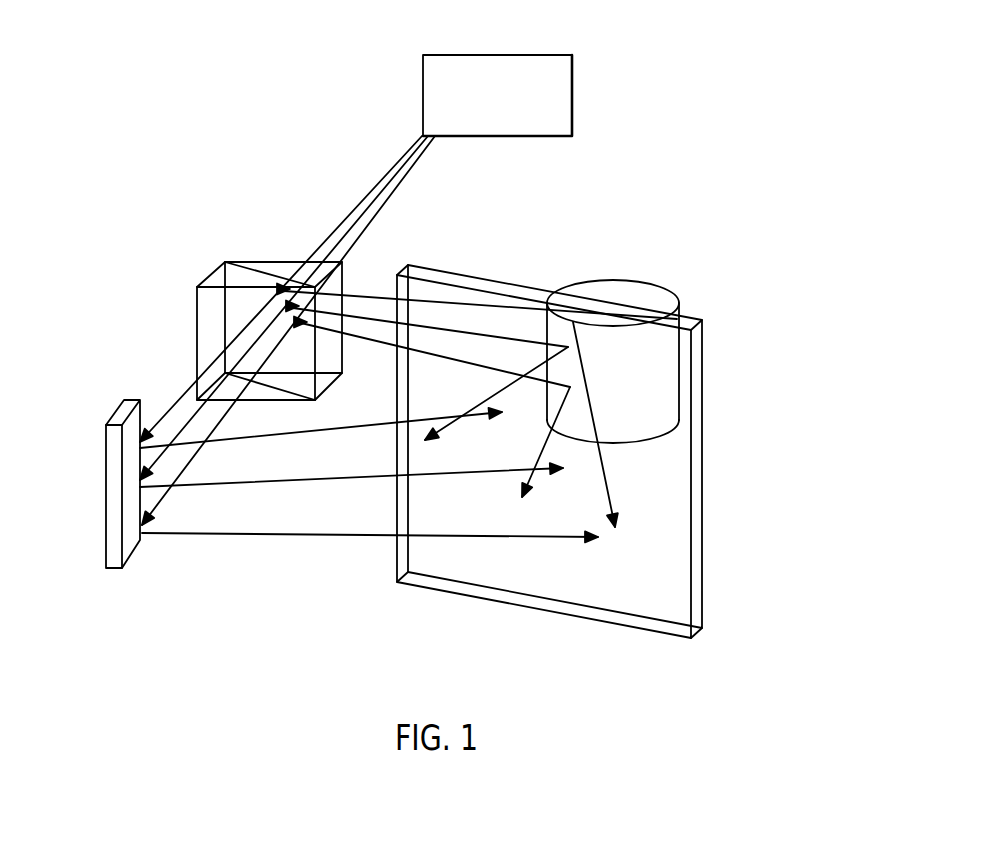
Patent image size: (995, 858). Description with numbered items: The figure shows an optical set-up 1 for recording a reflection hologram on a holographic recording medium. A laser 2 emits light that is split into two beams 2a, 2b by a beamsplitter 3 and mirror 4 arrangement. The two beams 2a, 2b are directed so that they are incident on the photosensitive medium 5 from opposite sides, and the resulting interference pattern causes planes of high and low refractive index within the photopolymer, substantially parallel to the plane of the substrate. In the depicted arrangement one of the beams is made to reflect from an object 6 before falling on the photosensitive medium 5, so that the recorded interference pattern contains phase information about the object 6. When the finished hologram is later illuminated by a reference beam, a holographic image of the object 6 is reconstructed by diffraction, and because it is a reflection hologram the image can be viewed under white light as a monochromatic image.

The set-up 1 is at (210, 145).
The laser 2 is at (538, 72).
The beam 2a is at (403, 320).
The beam 2b is at (308, 483).
The beamsplitter 3 is at (283, 270).
The mirror 4 is at (115, 515).
The photosensitive medium 5 is at (668, 518).
The object 6 is at (654, 287).